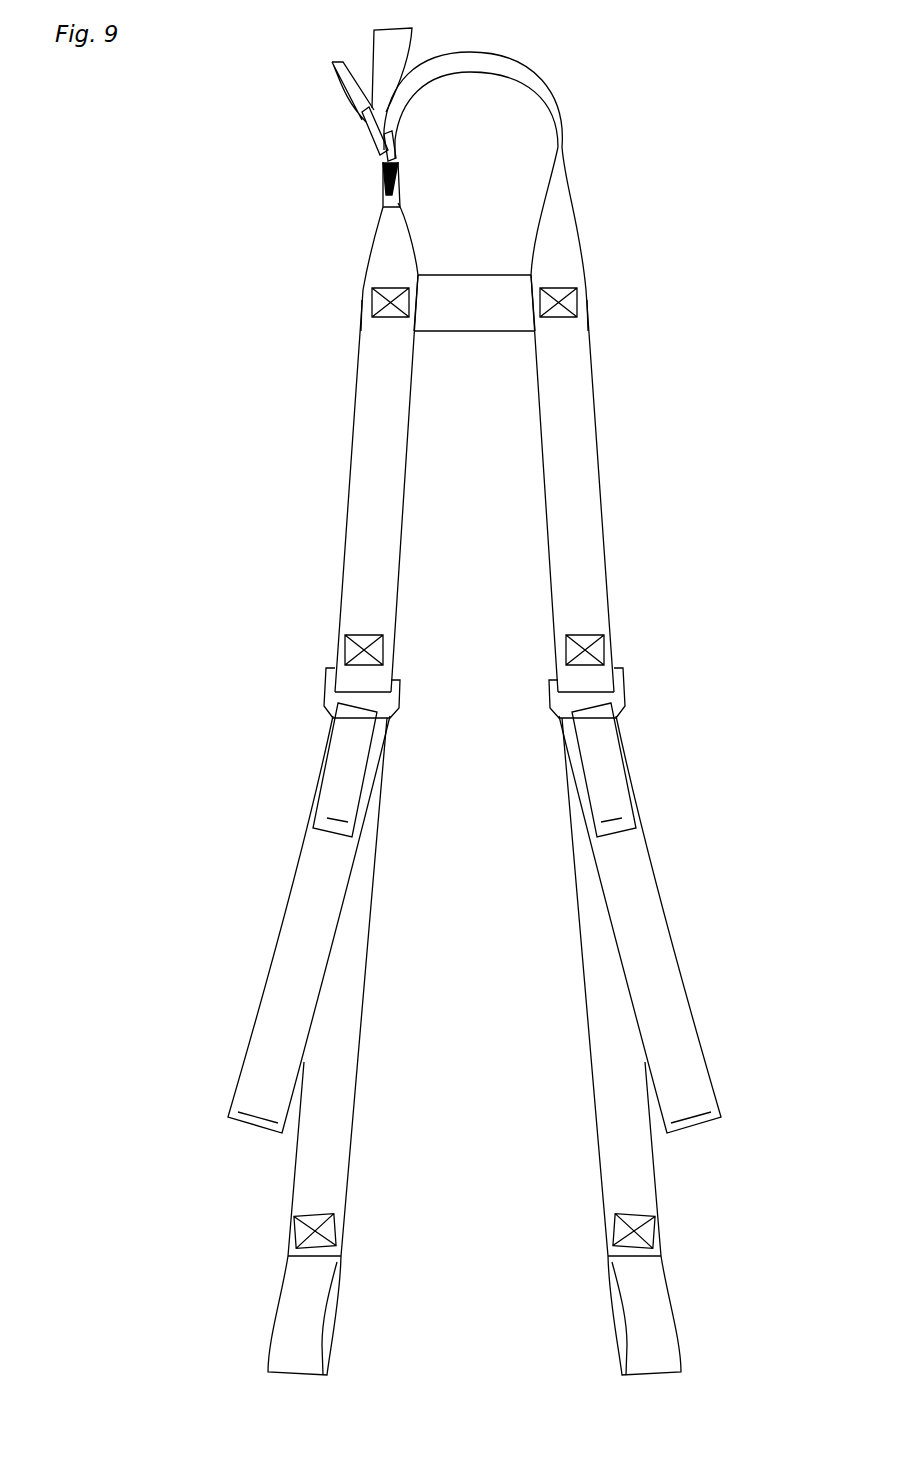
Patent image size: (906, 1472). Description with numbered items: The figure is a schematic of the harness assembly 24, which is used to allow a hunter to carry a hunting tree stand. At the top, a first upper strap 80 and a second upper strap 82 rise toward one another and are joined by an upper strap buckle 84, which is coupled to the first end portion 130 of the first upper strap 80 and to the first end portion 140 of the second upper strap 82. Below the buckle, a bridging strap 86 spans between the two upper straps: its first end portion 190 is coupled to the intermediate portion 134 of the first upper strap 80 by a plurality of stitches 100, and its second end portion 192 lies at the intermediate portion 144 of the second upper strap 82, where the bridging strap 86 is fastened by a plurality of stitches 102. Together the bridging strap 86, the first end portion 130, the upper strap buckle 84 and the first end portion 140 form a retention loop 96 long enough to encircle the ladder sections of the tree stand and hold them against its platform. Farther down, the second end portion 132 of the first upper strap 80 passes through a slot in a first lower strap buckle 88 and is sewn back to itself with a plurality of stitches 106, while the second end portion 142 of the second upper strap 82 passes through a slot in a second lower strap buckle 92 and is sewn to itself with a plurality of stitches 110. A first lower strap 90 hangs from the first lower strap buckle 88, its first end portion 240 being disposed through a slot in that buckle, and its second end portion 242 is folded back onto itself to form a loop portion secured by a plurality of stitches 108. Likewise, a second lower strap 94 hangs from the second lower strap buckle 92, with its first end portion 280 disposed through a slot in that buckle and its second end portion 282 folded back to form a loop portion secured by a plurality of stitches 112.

The harness assembly 24 is at (579, 229).
The retention loop 96 is at (560, 95).
The first end portion 130 is at (396, 100).
The upper strap buckle 84 is at (370, 130).
The first end portion 140 is at (383, 165).
The second upper strap 82 is at (350, 450).
The first upper strap 80 is at (598, 450).
The bridging strap 86 is at (503, 332).
The second end portion 192 is at (432, 282).
The first end portion 190 is at (523, 283).
The plurality of stitches 102 is at (372, 300).
The plurality of stitches 100 is at (580, 300).
The intermediate portion 144 is at (393, 322).
The intermediate portion 134 is at (557, 322).
The plurality of stitches 110 is at (345, 650).
The plurality of stitches 106 is at (604, 650).
The second end portion 142 is at (357, 682).
The second end portion 132 is at (592, 682).
The second lower strap buckle 92 is at (325, 703).
The first lower strap buckle 88 is at (624, 703).
The first end portion 280 is at (357, 937).
The first end portion 240 is at (592, 937).
The second lower strap 94 is at (353, 1138).
The first lower strap 90 is at (597, 1138).
The plurality of stitches 112 is at (295, 1232).
The plurality of stitches 108 is at (655, 1232).
The second end portion 282 is at (278, 1328).
The second end portion 242 is at (672, 1328).